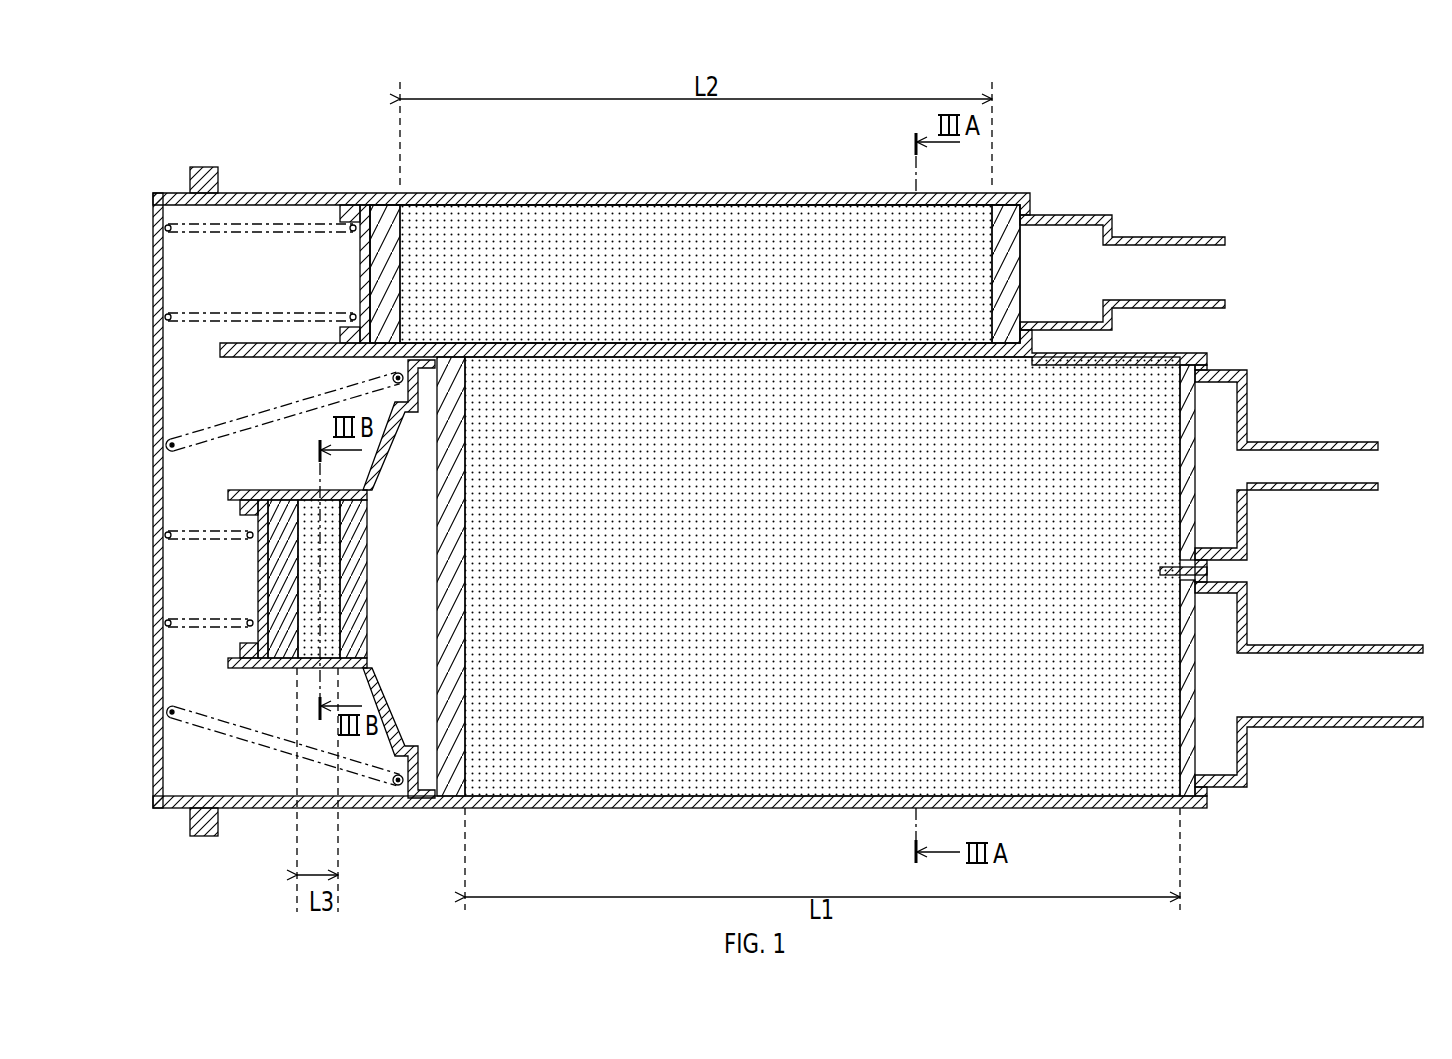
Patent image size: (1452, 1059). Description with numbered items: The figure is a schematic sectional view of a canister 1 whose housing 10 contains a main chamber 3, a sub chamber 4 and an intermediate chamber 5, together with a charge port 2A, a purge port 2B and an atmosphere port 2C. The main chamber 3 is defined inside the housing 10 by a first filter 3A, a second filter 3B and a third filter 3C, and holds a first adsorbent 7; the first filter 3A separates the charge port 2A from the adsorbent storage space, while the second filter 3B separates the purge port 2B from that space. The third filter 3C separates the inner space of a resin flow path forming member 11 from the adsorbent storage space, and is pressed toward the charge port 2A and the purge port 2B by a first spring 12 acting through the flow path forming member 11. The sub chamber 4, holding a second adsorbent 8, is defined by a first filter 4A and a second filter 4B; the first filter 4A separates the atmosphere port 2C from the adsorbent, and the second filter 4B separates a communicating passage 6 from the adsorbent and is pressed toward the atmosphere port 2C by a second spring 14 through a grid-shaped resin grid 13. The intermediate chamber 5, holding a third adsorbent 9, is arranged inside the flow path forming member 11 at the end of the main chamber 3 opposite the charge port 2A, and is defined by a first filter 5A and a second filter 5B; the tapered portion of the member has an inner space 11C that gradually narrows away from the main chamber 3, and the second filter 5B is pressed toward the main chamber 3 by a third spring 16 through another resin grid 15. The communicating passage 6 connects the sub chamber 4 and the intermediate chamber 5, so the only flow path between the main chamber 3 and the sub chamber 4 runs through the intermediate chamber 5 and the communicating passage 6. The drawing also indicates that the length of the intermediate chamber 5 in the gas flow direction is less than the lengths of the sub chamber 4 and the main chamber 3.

The canister 1 is at (1147, 117).
The charge port 2A is at (1330, 693).
The purge port 2B is at (1322, 470).
The atmosphere port 2C is at (1172, 262).
The main chamber 3 is at (1062, 805).
The first filter 3A is at (1187, 685).
The second filter 3B is at (1188, 433).
The third filter 3C is at (457, 663).
The sub chamber 4 is at (752, 193).
The first filter 4A is at (1007, 260).
The second filter 4B is at (398, 235).
The intermediate chamber 5 is at (303, 490).
The first filter 5A is at (357, 572).
The second filter 5B is at (285, 598).
The communicating passage 6 is at (207, 273).
The first adsorbent 7 is at (748, 733).
The second adsorbent 8 is at (810, 218).
The third adsorbent 9 is at (307, 578).
The housing 10 is at (152, 205).
The flow path forming member 11 is at (388, 375).
The inner space 11C is at (425, 722).
The first spring 12 is at (200, 722).
The resin grid 13 is at (362, 250).
The second spring 14 is at (240, 227).
The resin grid 15 is at (260, 523).
The third spring 16 is at (190, 622).